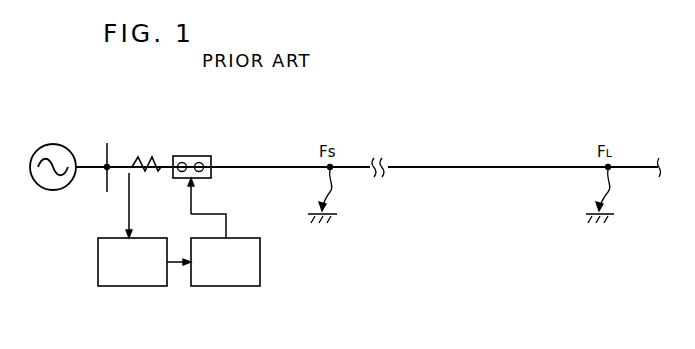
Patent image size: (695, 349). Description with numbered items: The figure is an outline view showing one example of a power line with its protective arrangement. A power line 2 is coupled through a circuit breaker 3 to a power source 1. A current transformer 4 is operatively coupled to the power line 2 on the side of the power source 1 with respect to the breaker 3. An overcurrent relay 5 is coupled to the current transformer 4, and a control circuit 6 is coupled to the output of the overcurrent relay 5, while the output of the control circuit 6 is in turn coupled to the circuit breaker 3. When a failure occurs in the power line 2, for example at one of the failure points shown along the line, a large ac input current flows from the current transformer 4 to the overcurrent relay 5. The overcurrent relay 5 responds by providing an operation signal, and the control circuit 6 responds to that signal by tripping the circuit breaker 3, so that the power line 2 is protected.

The power source 1 is at (70, 149).
The power line 2 is at (452, 167).
The circuit breaker 3 is at (193, 156).
The current transformer 4 is at (135, 157).
The overcurrent relay 5 is at (131, 286).
The control circuit 6 is at (225, 286).